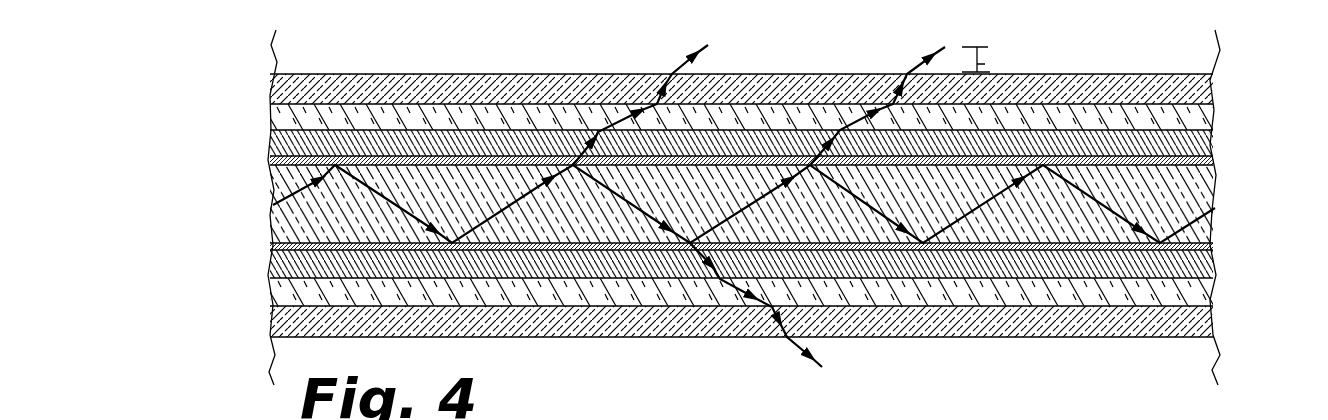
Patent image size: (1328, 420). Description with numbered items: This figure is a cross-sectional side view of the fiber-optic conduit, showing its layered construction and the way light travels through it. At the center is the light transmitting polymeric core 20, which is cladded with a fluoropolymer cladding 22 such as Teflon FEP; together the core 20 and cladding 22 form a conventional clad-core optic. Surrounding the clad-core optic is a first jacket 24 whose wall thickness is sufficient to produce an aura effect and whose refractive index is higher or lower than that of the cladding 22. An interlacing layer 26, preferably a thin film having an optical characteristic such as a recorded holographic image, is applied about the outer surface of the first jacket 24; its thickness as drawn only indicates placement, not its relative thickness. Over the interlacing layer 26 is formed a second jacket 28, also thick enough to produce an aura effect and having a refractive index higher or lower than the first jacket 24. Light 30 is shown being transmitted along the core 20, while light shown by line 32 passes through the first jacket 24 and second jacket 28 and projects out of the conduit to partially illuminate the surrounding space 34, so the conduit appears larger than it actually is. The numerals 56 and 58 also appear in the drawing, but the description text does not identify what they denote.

The light transmitting polymeric core 20 is at (1212, 180).
The fluoropolymer cladding 22 is at (1210, 163).
The first jacket 24 is at (1205, 150).
The interlacing layer 26 is at (1200, 118).
The second jacket 28 is at (1200, 92).
The light 30 is at (1205, 231).
The light line contributing to the aura effect 32 is at (907, 75).
The space surrounding the conduit 34 is at (985, 64).
The light source 56 is at (943, 407).
The light source 58 is at (1041, 413).